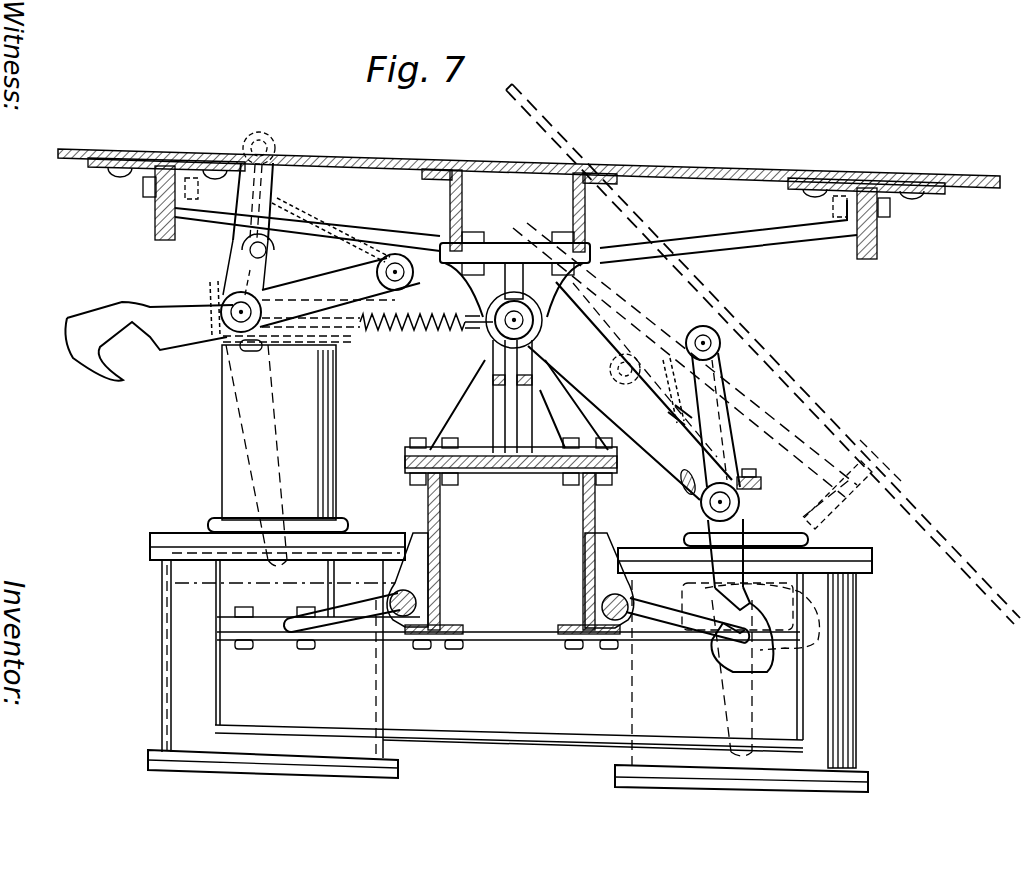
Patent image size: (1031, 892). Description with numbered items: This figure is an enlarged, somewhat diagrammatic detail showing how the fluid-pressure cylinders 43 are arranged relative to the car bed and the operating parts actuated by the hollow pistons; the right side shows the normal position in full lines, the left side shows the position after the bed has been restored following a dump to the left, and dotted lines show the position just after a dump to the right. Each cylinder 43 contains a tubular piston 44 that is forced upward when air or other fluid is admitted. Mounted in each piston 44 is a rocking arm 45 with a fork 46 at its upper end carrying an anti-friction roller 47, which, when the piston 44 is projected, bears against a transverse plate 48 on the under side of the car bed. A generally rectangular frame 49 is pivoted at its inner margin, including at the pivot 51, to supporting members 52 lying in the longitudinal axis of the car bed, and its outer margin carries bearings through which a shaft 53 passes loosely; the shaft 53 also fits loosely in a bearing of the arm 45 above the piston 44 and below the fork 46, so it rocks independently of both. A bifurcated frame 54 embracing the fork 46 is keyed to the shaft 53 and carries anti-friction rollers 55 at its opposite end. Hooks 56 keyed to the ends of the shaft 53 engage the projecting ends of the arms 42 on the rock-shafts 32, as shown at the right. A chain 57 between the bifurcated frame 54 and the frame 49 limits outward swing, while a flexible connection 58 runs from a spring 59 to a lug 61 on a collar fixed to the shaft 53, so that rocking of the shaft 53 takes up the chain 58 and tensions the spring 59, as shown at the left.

The rock-shaft 32 is at (603, 608).
The arm 42 is at (350, 632).
The fluid-pressure cylinder 43 is at (160, 658).
The tubular piston 44 is at (222, 478).
The rocking arm 45 is at (272, 412).
The fork 46 is at (238, 275).
The anti-friction roller 47 is at (273, 254).
The transverse plate 48 is at (355, 240).
The frame 49 is at (415, 336).
The pivot 51 is at (524, 320).
The supporting member 52 is at (475, 368).
The shaft 53 is at (215, 337).
The bifurcated frame 54 is at (273, 200).
The anti-friction roller 55 is at (414, 279).
The hook 56 is at (152, 314).
The chain 57 is at (298, 222).
The flexible connection 58 is at (247, 352).
The spring 59 is at (362, 344).
The lug 61 is at (210, 284).